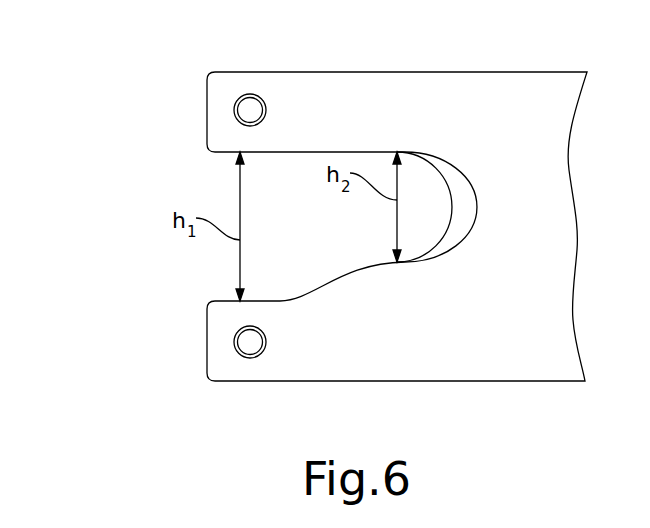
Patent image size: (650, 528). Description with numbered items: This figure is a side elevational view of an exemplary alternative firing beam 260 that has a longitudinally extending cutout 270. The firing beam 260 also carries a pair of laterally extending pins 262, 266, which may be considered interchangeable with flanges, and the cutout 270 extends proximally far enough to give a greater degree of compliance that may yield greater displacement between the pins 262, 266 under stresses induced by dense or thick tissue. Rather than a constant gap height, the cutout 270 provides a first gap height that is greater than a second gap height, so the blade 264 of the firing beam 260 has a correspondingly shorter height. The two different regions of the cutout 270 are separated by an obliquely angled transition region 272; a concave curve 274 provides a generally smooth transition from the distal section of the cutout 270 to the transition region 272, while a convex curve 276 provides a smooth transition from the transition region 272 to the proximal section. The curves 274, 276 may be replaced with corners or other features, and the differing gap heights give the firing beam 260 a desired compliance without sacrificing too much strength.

The firing beam 260 is at (147, 155).
The laterally extending pin 262 is at (250, 105).
The blade 264 is at (433, 184).
The laterally extending pin 266 is at (250, 342).
The cutout 270 is at (205, 278).
The transition region 272 is at (333, 283).
The concave curve 274 is at (313, 297).
The convex curve 276 is at (362, 273).